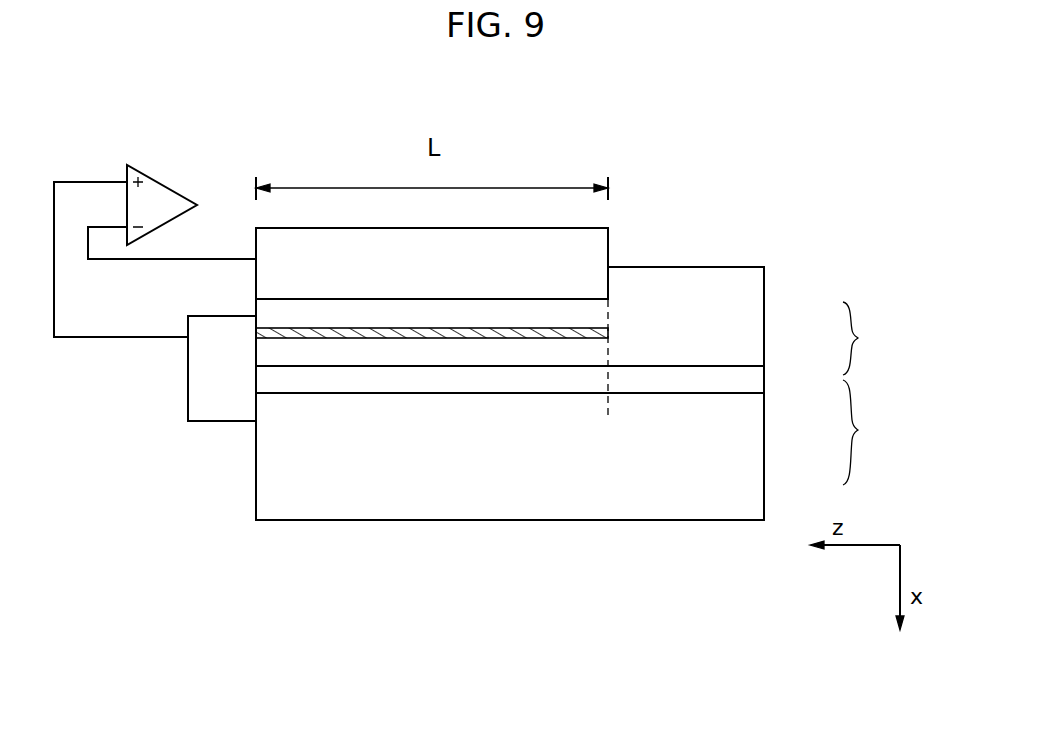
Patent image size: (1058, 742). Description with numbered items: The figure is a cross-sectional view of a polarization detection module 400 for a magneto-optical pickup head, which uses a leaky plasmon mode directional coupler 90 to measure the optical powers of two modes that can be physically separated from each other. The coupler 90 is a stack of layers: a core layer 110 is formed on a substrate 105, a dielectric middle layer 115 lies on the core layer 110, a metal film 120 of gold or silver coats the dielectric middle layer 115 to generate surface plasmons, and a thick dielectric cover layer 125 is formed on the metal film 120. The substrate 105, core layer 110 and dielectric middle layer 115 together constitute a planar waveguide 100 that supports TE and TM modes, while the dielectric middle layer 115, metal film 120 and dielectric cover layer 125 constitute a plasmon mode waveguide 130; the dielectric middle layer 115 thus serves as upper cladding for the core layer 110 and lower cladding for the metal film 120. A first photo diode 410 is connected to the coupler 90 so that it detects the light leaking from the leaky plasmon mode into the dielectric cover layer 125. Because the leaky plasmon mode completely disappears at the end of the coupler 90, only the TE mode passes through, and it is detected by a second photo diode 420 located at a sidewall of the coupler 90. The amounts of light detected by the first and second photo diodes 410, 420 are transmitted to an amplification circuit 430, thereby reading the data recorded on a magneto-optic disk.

The polarization detection module 400 is at (724, 138).
The first photo diode 410 is at (597, 256).
The second photo diode 420 is at (215, 422).
The amplification circuit 430 is at (163, 173).
The dielectric cover layer 125 is at (748, 306).
The metal film 120 is at (608, 333).
The dielectric middle layer 115 is at (748, 380).
The core layer 110 is at (748, 413).
The substrate 105 is at (748, 483).
The plasmon mode waveguide 130 is at (874, 338).
The planar waveguide 100 is at (874, 432).
The leaky plasmon mode directional coupler 90 is at (433, 404).